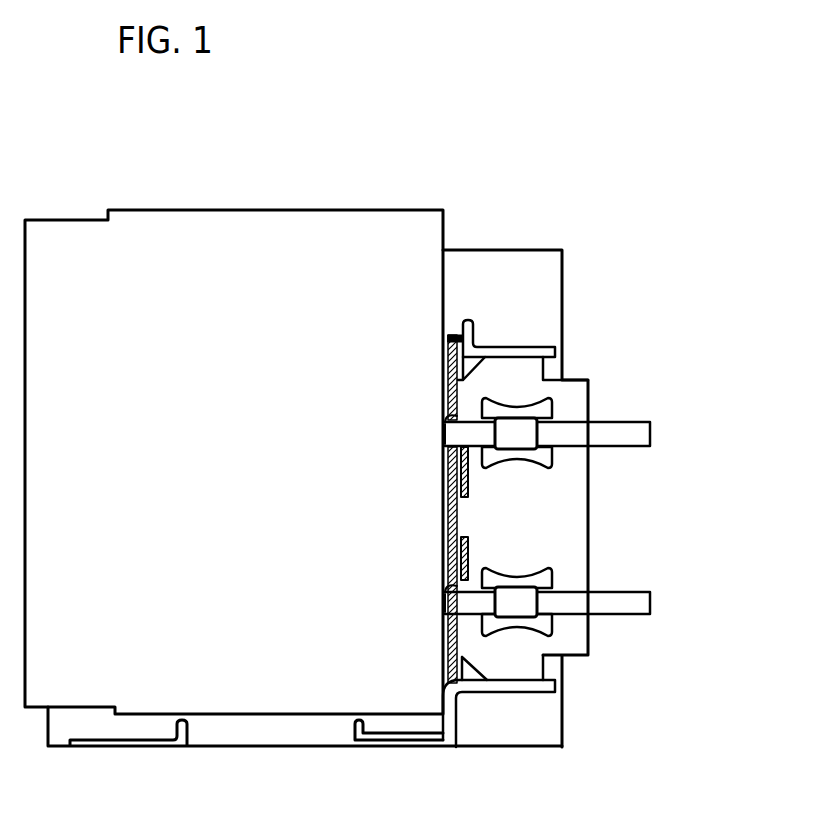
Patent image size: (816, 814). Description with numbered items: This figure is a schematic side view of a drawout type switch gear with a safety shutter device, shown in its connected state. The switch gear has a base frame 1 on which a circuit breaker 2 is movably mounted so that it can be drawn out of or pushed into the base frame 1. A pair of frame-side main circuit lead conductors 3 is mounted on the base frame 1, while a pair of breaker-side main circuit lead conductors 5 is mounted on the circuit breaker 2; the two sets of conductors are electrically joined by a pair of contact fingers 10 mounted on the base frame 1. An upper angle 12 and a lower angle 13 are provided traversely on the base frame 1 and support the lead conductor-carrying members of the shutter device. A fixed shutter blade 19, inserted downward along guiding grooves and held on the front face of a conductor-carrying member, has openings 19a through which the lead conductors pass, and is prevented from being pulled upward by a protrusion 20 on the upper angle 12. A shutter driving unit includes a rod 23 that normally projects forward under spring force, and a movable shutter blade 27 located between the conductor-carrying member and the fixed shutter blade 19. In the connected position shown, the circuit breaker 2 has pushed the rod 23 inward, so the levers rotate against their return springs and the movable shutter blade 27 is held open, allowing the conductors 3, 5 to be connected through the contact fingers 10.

The base frame 1 is at (540, 258).
The circuit breaker 2 is at (233, 217).
The frame-side main circuit lead conductor 3 is at (635, 430).
The breaker-side main circuit lead conductor 5 is at (445, 430).
The contact finger 10 is at (555, 405).
The upper angle 12 is at (498, 348).
The lower angle 13 is at (507, 688).
The fixed shutter blade 19 is at (443, 370).
The opening 19a is at (442, 418).
The protrusion 20 is at (447, 330).
The rod 23 is at (452, 515).
The movable shutter blade 27 is at (461, 471).